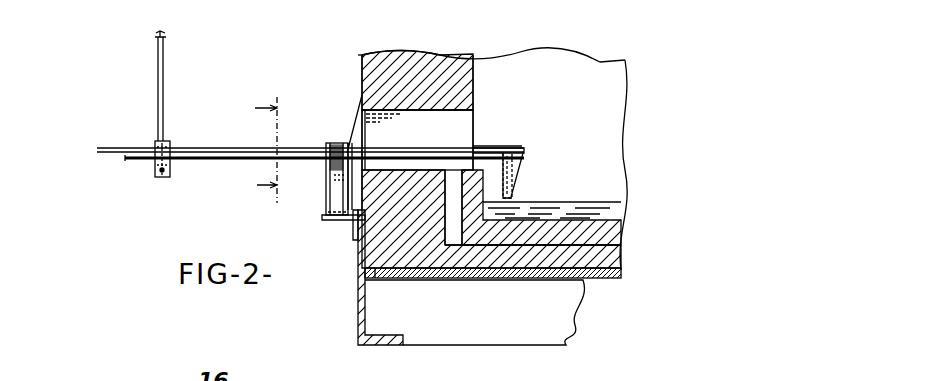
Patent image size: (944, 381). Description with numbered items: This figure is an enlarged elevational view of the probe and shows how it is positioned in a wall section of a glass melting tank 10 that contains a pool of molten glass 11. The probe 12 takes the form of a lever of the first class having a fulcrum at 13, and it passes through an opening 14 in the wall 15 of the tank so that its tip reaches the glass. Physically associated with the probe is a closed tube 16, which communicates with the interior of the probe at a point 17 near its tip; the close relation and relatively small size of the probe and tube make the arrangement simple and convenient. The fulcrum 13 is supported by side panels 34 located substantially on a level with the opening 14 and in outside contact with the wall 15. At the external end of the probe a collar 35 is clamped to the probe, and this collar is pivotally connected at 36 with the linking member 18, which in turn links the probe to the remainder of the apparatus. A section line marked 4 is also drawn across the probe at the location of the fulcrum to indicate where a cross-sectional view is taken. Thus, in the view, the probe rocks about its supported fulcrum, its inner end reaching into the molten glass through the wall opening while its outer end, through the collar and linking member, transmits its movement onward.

The section line 4- 4 is at (275, 149).
The glass melting tank 10 is at (621, 262).
The pool of molten glass 11 is at (615, 206).
The probe 12 is at (207, 163).
The fulcrum 13 is at (334, 168).
The opening 14 is at (476, 118).
The wall 15 is at (474, 72).
The closed tube 16 is at (524, 152).
The point 17 is at (513, 190).
The linking member 18 is at (163, 85).
The side panels 34 is at (340, 180).
The collar 35 is at (157, 172).
The pivotal connection 36 is at (170, 143).